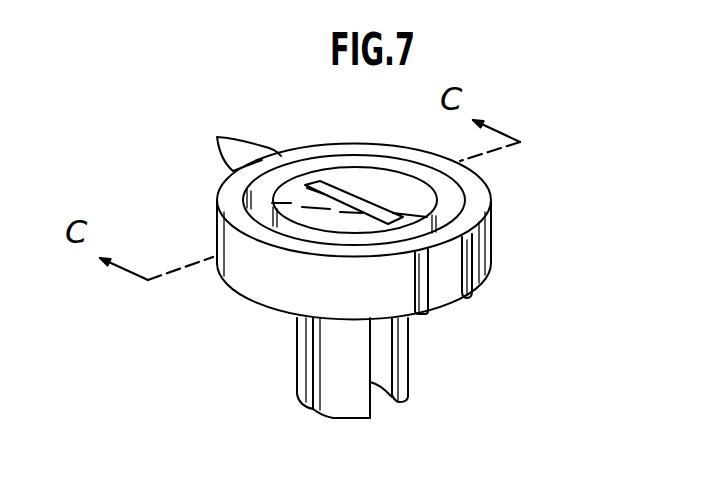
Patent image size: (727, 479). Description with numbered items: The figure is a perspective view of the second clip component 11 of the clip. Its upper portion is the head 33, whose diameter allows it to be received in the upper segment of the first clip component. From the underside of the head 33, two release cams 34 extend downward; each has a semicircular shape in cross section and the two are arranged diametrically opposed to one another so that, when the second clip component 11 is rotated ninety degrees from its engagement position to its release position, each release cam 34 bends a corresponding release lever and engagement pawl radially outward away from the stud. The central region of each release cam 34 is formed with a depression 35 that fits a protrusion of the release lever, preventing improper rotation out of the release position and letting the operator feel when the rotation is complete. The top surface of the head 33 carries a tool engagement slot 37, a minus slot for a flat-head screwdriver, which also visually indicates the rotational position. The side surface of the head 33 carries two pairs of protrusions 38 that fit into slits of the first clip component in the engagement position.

The second clip component 11 is at (556, 151).
The head 33 is at (478, 200).
The release cam 34 is at (337, 397).
The depression 35 is at (315, 380).
The tool engagement slot 37 is at (347, 195).
The protrusions 38 is at (221, 140).